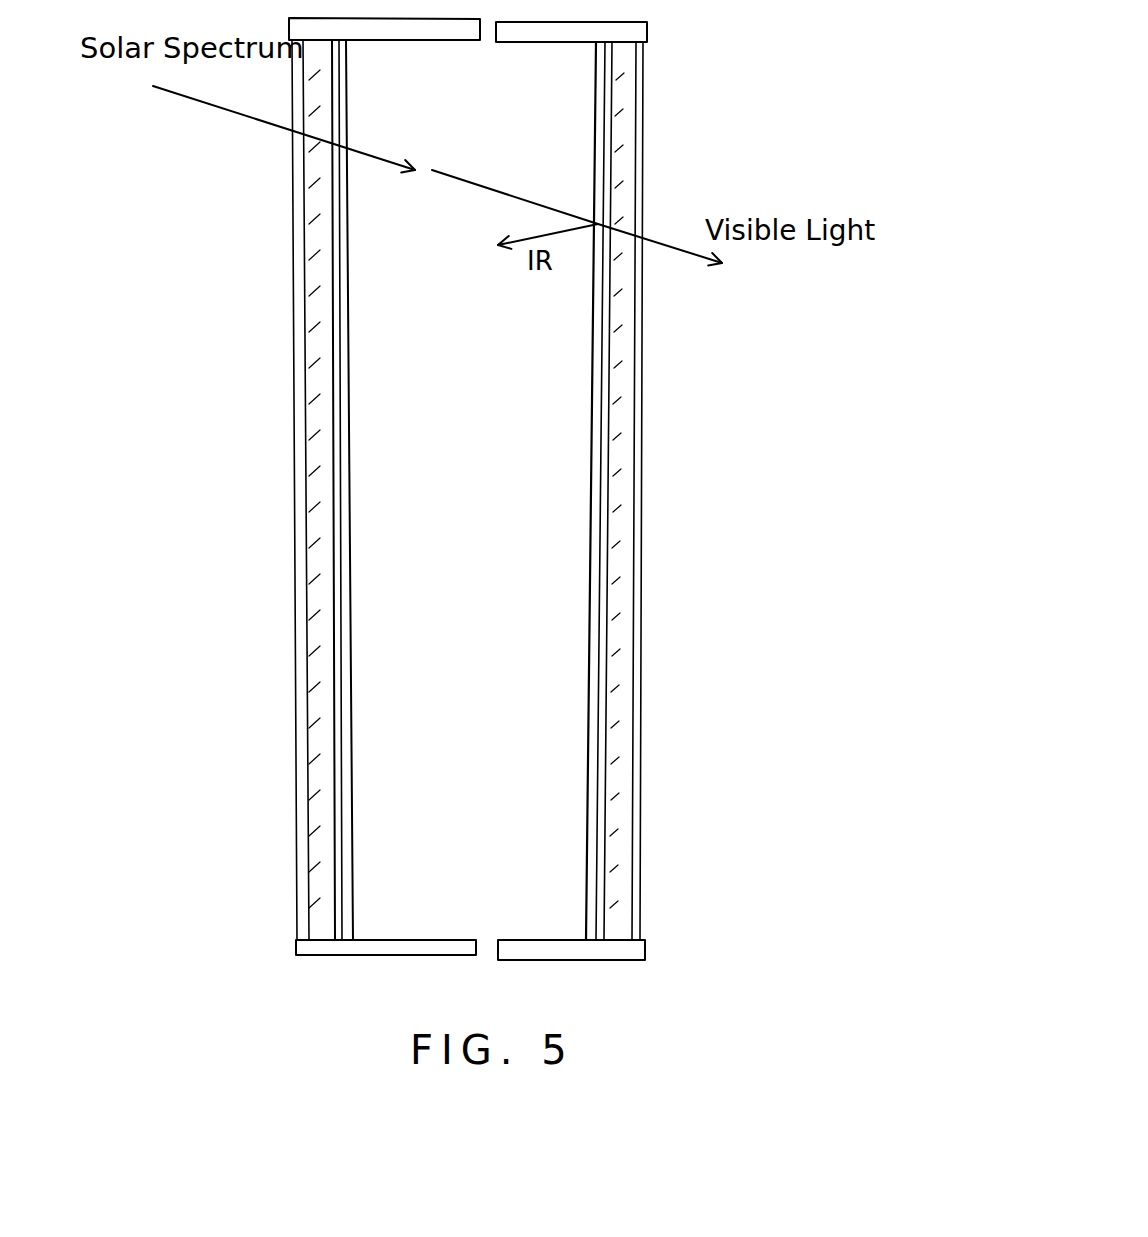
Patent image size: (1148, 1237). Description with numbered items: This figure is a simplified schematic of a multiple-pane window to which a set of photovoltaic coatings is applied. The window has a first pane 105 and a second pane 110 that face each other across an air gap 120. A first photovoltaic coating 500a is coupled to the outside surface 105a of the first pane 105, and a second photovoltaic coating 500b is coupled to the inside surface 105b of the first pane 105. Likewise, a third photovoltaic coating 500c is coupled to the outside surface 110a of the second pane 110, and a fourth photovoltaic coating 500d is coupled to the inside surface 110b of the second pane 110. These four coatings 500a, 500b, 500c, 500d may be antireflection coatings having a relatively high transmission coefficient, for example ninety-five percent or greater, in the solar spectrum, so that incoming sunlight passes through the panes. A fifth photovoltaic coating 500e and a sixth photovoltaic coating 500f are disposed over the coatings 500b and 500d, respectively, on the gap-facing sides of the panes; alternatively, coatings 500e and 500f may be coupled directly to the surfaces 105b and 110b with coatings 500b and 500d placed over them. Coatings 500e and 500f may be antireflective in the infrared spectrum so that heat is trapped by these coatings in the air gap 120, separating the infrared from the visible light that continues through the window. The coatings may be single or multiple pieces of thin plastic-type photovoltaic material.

The first pane 105 is at (309, 490).
The outside surface of first pane 105a is at (244, 490).
The inside surface of first pane 105b is at (391, 490).
The second pane 110 is at (628, 491).
The outside surface of second pane 110a is at (686, 491).
The inside surface of second pane 110b is at (605, 695).
The air gap 120 is at (583, 91).
The first photovoltaic coating 500a is at (296, 277).
The second photovoltaic coating 500b is at (345, 770).
The third photovoltaic coating 500c is at (640, 445).
The fourth photovoltaic coating 500d is at (605, 382).
The fifth photovoltaic coating 500e is at (352, 805).
The sixth photovoltaic coating 500f is at (598, 402).